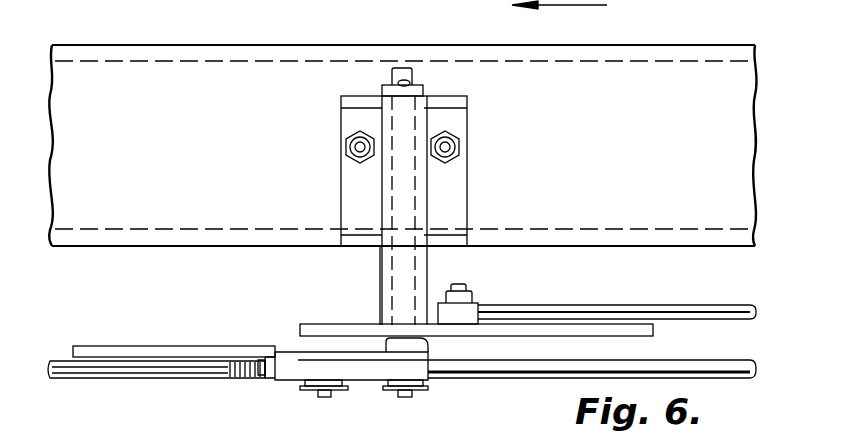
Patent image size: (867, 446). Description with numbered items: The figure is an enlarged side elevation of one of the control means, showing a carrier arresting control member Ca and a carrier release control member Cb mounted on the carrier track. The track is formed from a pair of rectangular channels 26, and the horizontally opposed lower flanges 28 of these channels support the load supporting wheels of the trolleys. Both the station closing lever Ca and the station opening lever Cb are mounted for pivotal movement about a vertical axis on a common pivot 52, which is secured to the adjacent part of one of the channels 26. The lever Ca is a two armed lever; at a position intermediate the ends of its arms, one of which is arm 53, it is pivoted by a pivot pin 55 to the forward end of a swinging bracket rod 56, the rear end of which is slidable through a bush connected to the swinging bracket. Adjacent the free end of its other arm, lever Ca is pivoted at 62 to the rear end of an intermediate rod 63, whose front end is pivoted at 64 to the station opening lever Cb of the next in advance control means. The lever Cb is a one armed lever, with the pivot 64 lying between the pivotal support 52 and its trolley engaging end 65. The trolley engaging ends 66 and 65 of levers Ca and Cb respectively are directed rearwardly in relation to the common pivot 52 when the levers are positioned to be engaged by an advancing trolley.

The rectangular channel 26 is at (93, 86).
The lower flange 28 is at (140, 247).
The common pivot 52 is at (412, 74).
The arm 53 is at (283, 350).
The pivot pin 55 is at (325, 396).
The swinging bracket rod 56 is at (487, 374).
The pivot 62 is at (406, 394).
The intermediate rod 63 is at (575, 311).
The pivot 64 is at (470, 292).
The trolley engaging end 65 is at (582, 325).
The trolley engaging end 66 is at (97, 350).
The carrier arresting control member Ca is at (207, 347).
The carrier release control member Cb is at (648, 330).